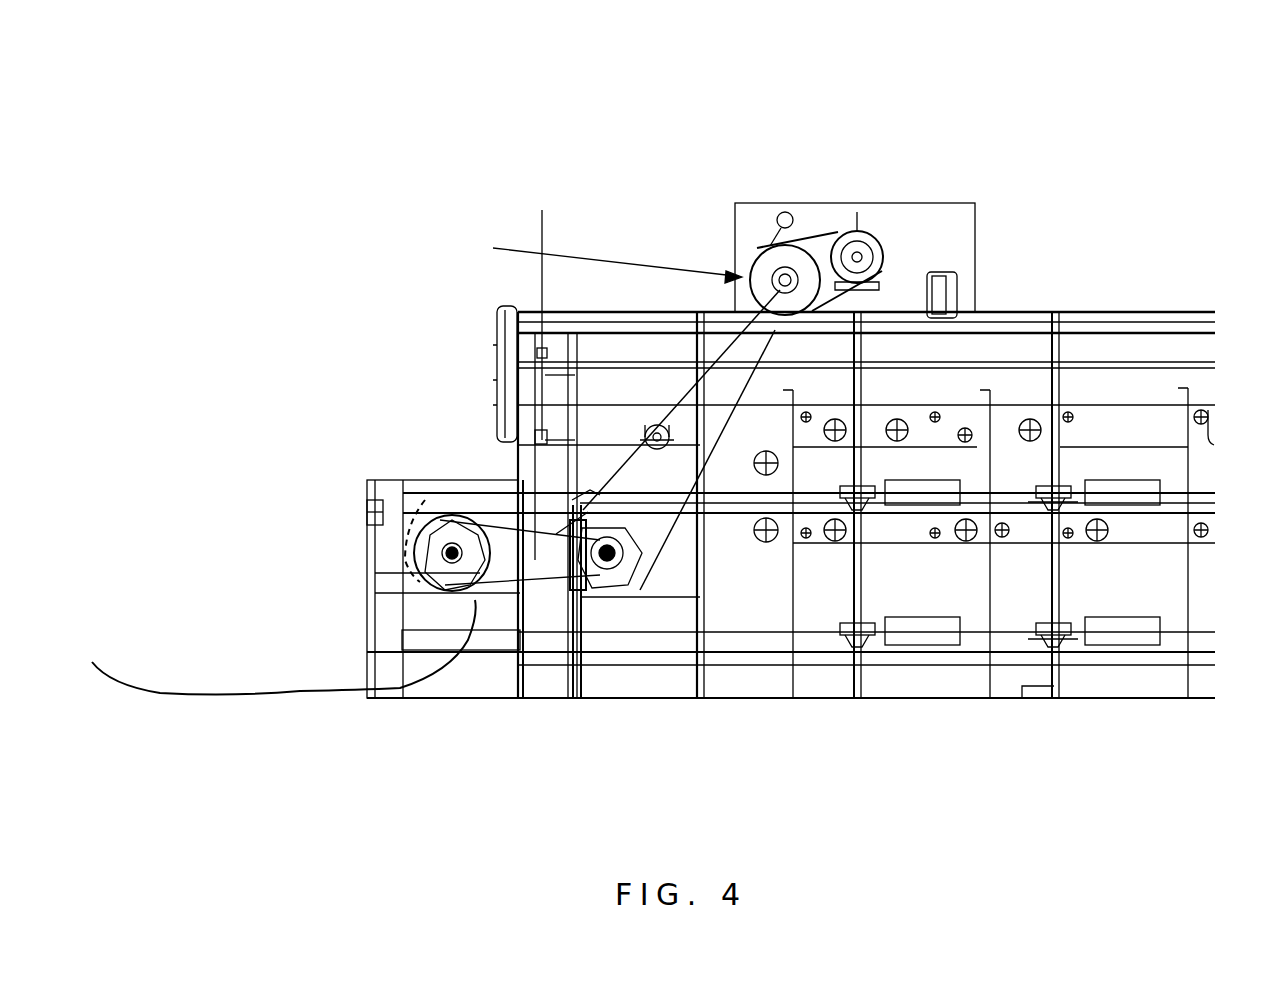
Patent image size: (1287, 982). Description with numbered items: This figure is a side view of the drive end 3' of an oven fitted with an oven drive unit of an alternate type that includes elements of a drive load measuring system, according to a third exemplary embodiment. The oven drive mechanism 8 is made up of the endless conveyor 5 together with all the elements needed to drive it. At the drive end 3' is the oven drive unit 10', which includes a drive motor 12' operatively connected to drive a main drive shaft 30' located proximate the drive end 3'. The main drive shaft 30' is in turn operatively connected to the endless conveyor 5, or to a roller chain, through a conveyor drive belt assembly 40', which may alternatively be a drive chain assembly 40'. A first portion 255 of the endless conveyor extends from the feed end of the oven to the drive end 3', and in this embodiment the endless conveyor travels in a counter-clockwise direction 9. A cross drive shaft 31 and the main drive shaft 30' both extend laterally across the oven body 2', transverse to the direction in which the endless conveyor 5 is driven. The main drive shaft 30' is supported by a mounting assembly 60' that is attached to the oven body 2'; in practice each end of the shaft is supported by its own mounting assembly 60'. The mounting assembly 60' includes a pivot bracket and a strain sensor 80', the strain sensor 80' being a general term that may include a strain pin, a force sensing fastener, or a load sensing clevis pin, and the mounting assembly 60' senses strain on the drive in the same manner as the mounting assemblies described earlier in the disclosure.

The drive end 3' is at (791, 355).
The oven drive mechanism 8 is at (585, 280).
The drive motor 12' is at (566, 186).
The oven drive unit 10' is at (948, 188).
The oven body 2' is at (1157, 206).
The first portion of the endless conveyor 255 is at (748, 506).
The counter-clockwise direction 9 is at (387, 555).
The endless conveyor 5 is at (430, 492).
The main drive shaft 30' is at (337, 608).
The conveyor drive belt assembly 40' is at (323, 607).
The mounting assembly 60' is at (369, 641).
The strain sensor 80' is at (509, 702).
The cross drive shaft 31 is at (624, 590).